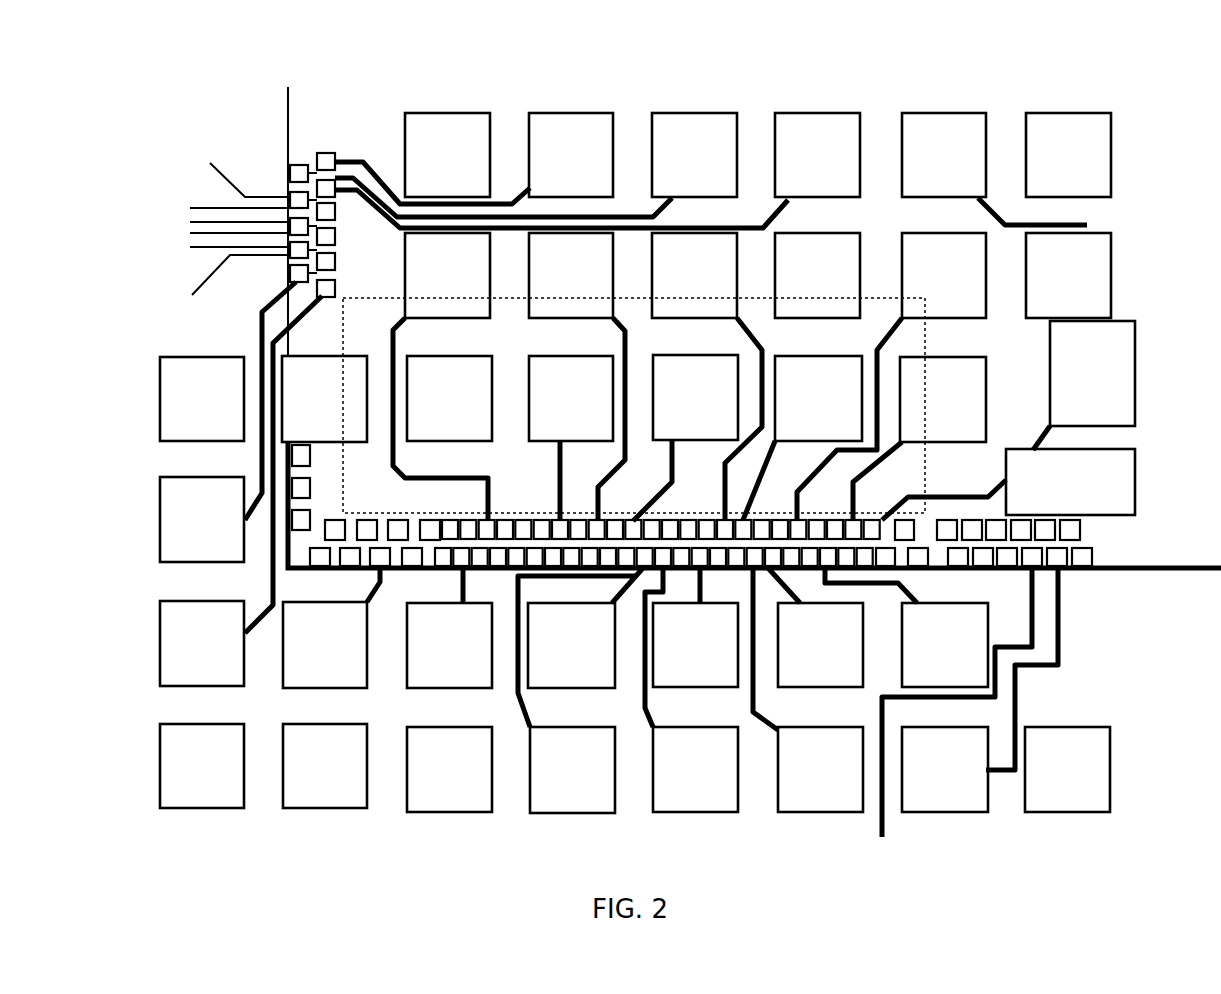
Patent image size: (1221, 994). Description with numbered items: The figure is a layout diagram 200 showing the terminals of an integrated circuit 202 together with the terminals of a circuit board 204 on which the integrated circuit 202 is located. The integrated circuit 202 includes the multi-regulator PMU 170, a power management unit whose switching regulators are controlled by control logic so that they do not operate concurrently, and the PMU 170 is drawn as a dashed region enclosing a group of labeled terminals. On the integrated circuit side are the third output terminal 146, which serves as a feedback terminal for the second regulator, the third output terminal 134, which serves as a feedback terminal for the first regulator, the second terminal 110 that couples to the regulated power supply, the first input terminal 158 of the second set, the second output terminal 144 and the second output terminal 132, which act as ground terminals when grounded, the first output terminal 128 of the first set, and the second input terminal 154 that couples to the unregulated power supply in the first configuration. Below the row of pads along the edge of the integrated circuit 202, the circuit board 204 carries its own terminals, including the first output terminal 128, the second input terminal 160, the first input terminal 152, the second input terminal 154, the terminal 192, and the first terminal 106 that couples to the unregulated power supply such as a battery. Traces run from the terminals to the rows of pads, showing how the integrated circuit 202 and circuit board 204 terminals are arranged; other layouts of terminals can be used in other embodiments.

The layout diagram 200 is at (126, 74).
The integrated circuit 202 is at (1152, 556).
The circuit board 204 is at (1122, 599).
The multi-regulator power management unit (PMU) 170 is at (560, 352).
The third output terminal 146 is at (432, 311).
The third output terminal 134 is at (556, 300).
The second terminal 110 is at (679, 300).
The first input terminal 158 is at (802, 311).
The second output terminal 144 is at (309, 434).
The second output terminal 132 is at (434, 423).
The first output terminal 128 is at (556, 434).
The second input terminal 154 is at (680, 434).
The second input terminal 160 is at (434, 681).
The first input terminal 152 is at (538, 678).
The terminal 192 is at (680, 669).
The first terminal 106 is at (557, 794).